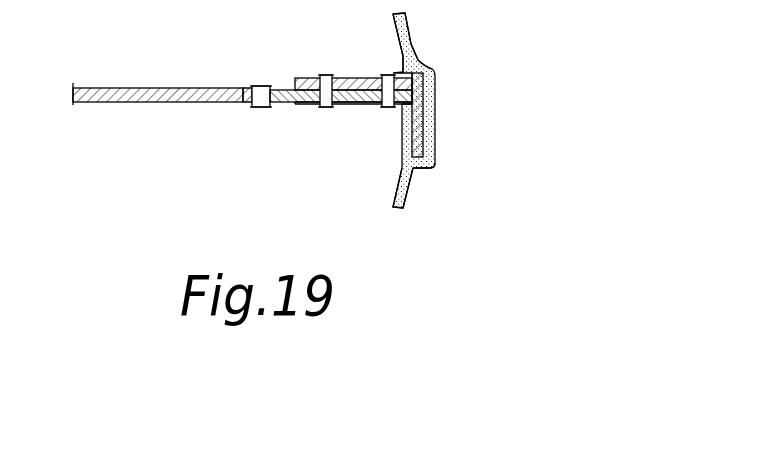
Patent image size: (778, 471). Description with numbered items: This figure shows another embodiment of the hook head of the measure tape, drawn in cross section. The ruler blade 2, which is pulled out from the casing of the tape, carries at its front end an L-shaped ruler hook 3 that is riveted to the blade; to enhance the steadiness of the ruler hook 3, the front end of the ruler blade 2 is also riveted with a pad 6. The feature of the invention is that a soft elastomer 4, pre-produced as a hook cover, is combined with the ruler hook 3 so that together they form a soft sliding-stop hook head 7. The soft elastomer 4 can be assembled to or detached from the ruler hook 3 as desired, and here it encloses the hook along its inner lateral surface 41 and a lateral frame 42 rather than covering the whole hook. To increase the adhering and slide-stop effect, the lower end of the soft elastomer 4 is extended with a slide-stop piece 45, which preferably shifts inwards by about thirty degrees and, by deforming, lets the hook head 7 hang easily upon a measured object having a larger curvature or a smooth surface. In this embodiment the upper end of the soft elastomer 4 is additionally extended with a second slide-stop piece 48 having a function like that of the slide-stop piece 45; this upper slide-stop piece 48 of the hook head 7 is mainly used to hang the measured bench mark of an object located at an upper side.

The ruler blade 2 is at (176, 87).
The ruler hook 3 is at (353, 77).
The pad 6 is at (297, 108).
The soft sliding-stop hook head 7 is at (428, 121).
The soft elastomer 4 is at (415, 121).
The inner lateral surface 41 is at (413, 135).
The lateral frame 42 is at (425, 170).
The slide-stop piece 45 is at (410, 200).
The slide-stop piece 48 is at (406, 23).